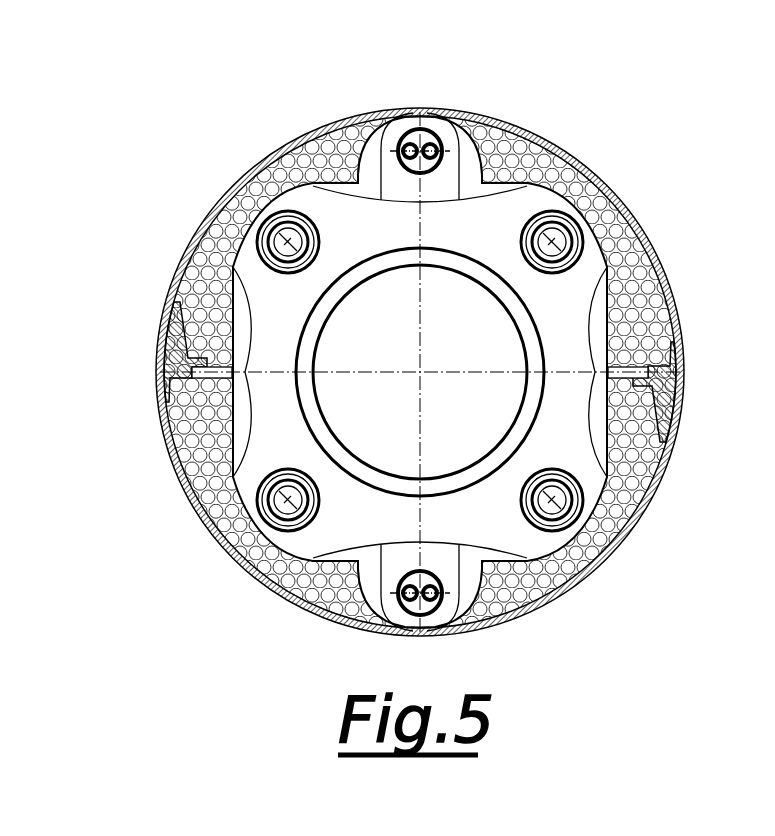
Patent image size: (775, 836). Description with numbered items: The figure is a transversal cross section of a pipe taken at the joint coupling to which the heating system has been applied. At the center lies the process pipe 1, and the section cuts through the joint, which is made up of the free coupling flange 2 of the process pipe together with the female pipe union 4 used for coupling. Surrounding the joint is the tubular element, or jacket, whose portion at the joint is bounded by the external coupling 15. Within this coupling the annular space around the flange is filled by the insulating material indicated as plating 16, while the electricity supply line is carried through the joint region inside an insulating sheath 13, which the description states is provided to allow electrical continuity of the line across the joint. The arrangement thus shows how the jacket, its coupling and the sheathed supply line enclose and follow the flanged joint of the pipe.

The process pipe 1 is at (464, 344).
The free coupling flange 2 is at (353, 513).
The female pipe union 4 is at (472, 480).
The insulating sheath 13 is at (408, 133).
The external coupling 15 is at (237, 193).
The plating 16 is at (510, 166).